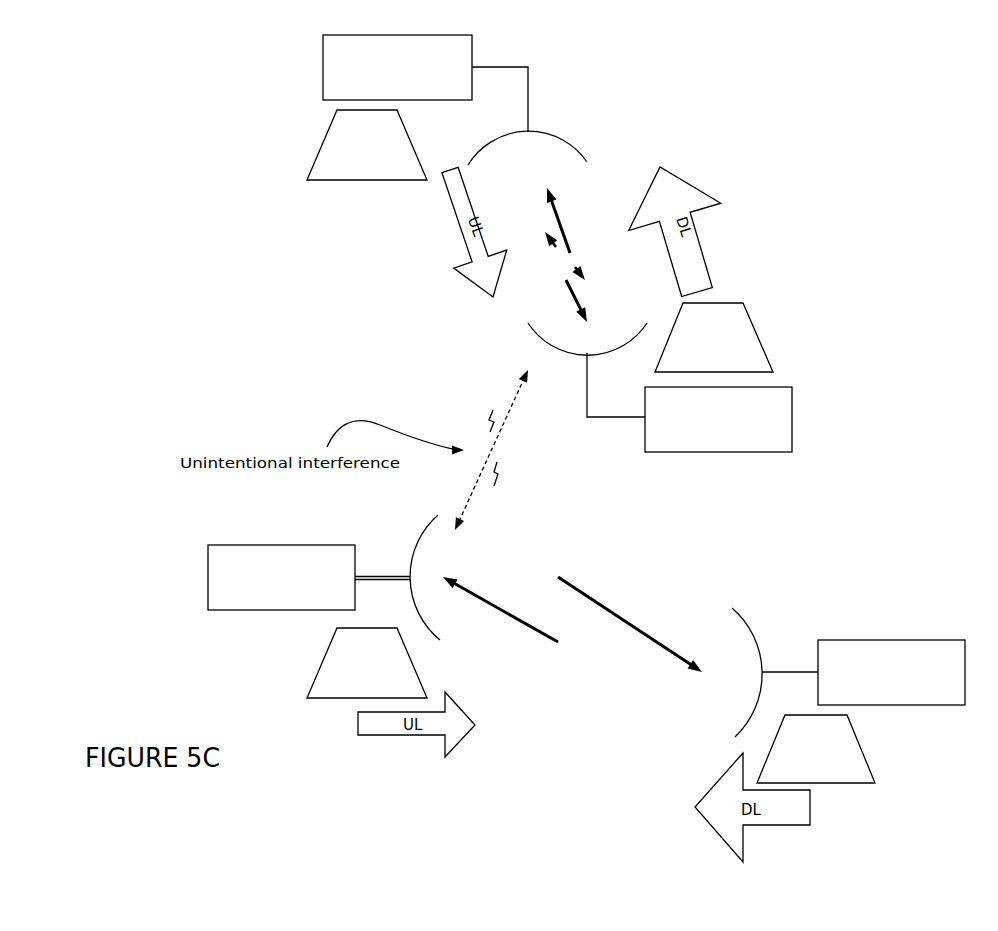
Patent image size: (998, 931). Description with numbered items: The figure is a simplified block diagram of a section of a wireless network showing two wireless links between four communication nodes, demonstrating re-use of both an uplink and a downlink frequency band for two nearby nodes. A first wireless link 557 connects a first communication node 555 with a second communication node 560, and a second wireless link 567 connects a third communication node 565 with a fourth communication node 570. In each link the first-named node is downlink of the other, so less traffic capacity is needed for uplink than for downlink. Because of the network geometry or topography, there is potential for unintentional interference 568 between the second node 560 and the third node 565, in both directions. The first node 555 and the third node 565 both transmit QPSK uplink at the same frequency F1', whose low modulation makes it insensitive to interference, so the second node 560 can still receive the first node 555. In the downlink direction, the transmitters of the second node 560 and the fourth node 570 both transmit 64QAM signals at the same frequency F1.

The first communication node 555 is at (417, 107).
The second communication node 560 is at (689, 377).
The third communication node 565 is at (324, 606).
The fourth communication node 570 is at (848, 695).
The first wireless link 557 is at (566, 255).
The second wireless link 567 is at (558, 577).
The unintentional interference 568 is at (491, 450).